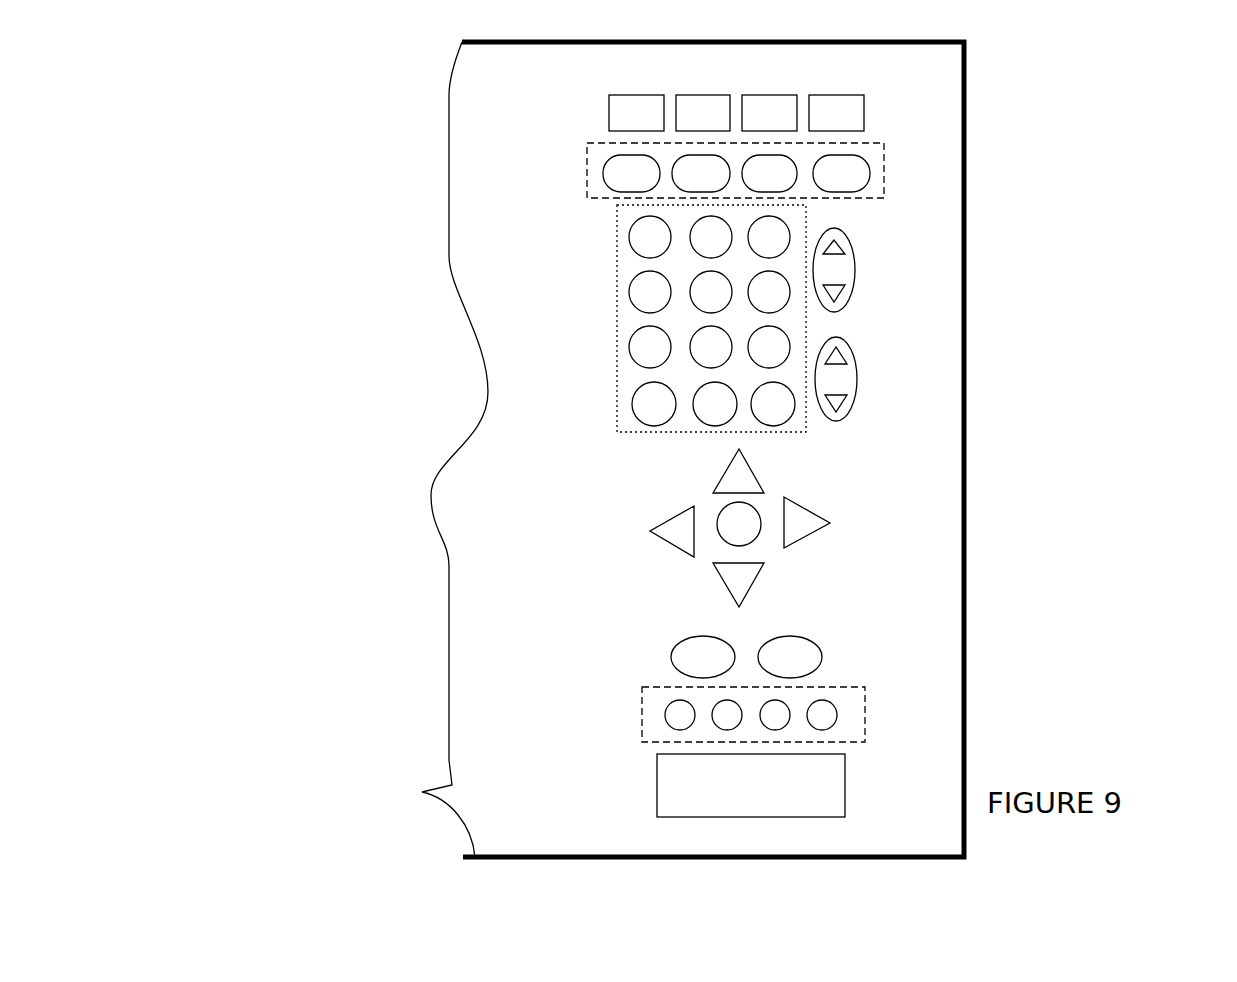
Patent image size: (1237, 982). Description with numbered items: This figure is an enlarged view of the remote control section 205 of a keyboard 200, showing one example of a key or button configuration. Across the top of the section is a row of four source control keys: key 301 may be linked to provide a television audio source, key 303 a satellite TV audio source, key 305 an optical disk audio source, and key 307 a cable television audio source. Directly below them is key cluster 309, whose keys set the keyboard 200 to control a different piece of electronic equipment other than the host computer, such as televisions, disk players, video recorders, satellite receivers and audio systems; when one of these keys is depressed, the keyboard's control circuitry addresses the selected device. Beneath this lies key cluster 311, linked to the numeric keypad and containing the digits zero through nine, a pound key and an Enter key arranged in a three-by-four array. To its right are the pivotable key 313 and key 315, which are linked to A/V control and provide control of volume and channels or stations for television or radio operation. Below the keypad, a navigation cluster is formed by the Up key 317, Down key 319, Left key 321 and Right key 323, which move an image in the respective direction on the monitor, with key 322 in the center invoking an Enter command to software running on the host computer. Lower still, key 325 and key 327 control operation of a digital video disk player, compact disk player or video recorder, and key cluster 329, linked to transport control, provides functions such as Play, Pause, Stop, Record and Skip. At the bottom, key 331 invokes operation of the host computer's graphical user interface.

The keyboard 200 is at (447, 220).
The remote control section 205 is at (933, 190).
The key 301 is at (637, 95).
The key 303 is at (706, 100).
The key 305 is at (770, 97).
The key 307 is at (835, 94).
The key cluster 309 is at (587, 172).
The key cluster 311 is at (617, 320).
The pivotable key 313 is at (855, 278).
The key 315 is at (860, 382).
The Up key 317 is at (739, 479).
The Down key 319 is at (739, 607).
The Left key 321 is at (676, 531).
The key 322 is at (739, 524).
The Right key 323 is at (826, 523).
The key 325 is at (673, 657).
The key 327 is at (820, 660).
The key cluster 329 is at (642, 715).
The key 331 is at (657, 790).